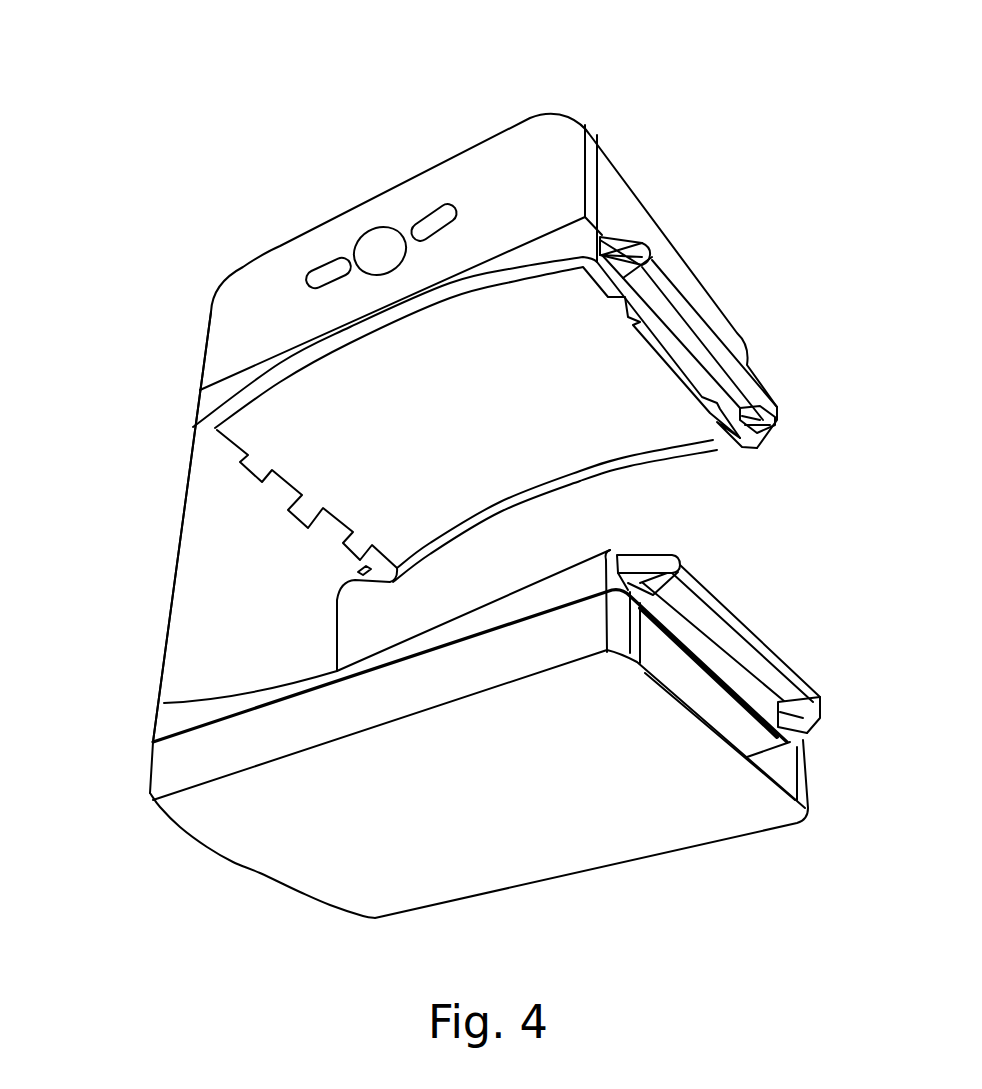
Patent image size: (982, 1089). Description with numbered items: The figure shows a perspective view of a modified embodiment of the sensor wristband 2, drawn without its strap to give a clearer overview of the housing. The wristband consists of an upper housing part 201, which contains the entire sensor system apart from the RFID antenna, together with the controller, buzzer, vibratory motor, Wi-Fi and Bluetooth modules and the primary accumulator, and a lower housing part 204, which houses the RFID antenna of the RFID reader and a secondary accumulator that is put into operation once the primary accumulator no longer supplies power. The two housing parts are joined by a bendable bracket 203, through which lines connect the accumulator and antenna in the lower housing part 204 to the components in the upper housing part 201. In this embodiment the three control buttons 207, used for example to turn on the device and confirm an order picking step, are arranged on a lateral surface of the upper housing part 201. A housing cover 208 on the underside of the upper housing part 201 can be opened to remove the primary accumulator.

The sensor wristband 2 is at (722, 220).
The upper housing part 201 is at (497, 130).
The bendable bracket 203 is at (178, 580).
The lower housing part 204 is at (245, 842).
The control buttons 207 is at (380, 242).
The housing cover 208 is at (707, 412).